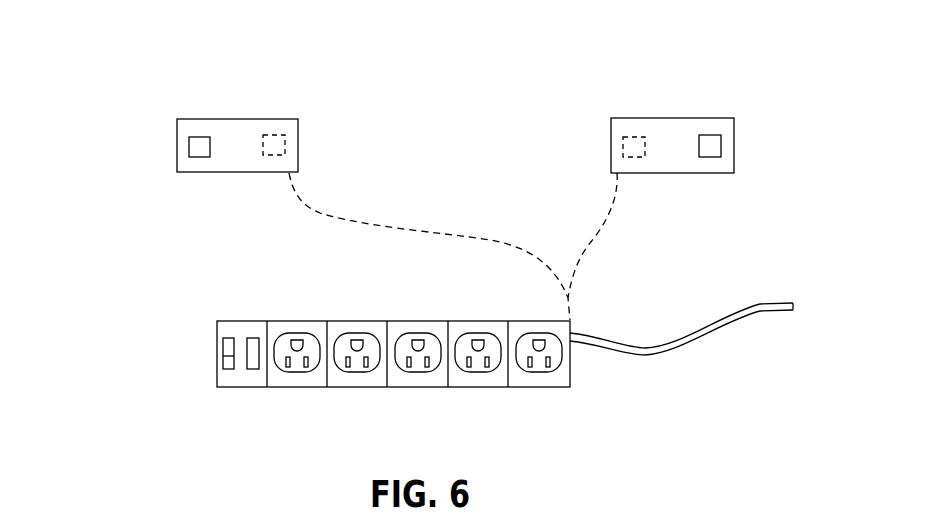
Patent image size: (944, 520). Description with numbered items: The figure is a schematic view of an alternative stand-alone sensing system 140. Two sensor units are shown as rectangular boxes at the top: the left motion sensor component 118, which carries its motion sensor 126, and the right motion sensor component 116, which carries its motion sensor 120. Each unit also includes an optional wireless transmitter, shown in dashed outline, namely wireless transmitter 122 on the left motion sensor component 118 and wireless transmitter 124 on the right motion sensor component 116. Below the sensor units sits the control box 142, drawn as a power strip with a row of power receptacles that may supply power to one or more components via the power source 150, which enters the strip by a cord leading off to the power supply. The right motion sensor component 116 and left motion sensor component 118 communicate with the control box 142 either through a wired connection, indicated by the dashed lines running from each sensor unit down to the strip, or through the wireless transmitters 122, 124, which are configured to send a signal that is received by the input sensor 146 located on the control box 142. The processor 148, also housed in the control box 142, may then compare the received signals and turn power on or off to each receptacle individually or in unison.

The stand-alone sensing system 140 is at (125, 61).
The left motion sensor component 118 is at (177, 146).
The motion sensor 126 is at (198, 158).
The wireless transmitter 122 is at (274, 135).
The right motion sensor component 116 is at (611, 146).
The wireless transmitter 124 is at (637, 137).
The motion sensor 120 is at (711, 135).
The control box 142 is at (277, 321).
The input sensor 146 is at (252, 387).
The processor 148 is at (228, 387).
The power source 150 is at (688, 340).